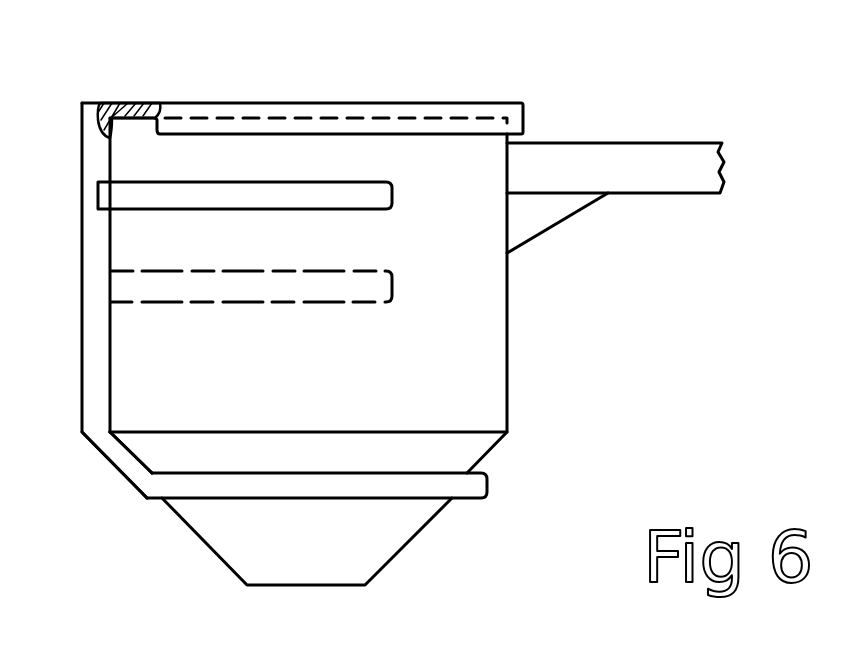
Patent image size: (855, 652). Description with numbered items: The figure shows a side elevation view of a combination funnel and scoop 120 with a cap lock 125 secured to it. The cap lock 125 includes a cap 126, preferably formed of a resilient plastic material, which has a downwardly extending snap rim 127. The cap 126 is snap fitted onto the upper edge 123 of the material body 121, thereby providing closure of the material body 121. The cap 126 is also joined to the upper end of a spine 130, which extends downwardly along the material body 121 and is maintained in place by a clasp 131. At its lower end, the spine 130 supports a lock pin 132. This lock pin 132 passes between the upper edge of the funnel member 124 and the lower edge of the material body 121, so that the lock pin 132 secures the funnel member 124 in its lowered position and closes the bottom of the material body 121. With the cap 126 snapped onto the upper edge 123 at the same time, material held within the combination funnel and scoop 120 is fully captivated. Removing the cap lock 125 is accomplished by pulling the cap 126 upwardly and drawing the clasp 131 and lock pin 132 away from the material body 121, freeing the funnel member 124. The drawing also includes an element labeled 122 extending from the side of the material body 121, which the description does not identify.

The combination funnel and scoop 120 is at (540, 333).
The material body 121 is at (507, 293).
The mounting arm 122 is at (645, 197).
The upper edge 123 is at (125, 118).
The funnel member 124 is at (400, 553).
The cap lock 125 is at (60, 117).
The cap 126 is at (417, 102).
The snap rim 127 is at (318, 127).
The spine 130 is at (130, 478).
The clasp 131 is at (343, 212).
The lock pin 132 is at (470, 487).